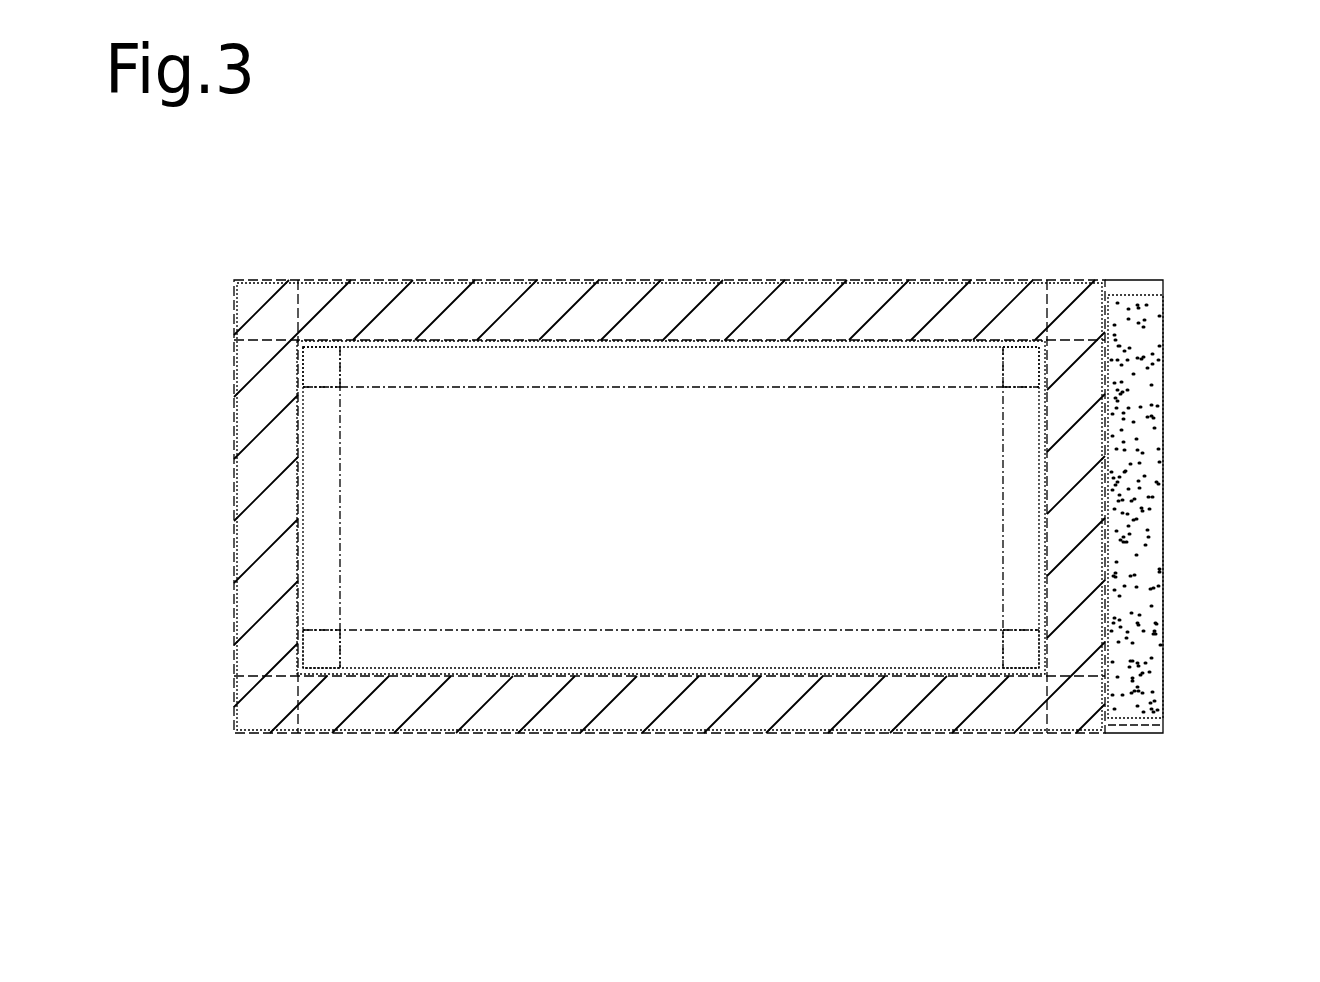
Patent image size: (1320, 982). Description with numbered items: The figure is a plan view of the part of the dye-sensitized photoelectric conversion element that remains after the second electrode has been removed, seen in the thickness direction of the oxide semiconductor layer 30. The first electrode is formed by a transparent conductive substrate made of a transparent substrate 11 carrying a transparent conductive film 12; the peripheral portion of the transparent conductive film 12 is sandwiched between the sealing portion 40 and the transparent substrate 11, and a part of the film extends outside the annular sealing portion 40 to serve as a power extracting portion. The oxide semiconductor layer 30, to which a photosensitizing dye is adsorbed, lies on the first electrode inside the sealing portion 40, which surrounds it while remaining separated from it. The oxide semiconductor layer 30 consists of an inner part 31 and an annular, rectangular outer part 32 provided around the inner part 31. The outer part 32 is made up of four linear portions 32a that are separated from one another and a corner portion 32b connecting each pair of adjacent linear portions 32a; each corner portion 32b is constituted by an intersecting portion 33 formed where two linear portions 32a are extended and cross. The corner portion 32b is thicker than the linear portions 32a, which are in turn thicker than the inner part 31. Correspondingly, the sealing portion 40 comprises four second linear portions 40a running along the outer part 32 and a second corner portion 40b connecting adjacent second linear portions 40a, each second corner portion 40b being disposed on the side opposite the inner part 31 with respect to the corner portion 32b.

The transparent substrate 11 is at (1145, 727).
The transparent conductive film 12 is at (1135, 675).
The oxide semiconductor layer 30 is at (1236, 453).
The inner part 31 is at (950, 548).
The outer part 32 is at (1025, 493).
The linear portion 32a is at (663, 340).
The corner portion 32b is at (299, 341).
The intersecting portion 33 is at (800, 508).
The sealing portion 40 is at (925, 305).
The second linear portion 40a is at (823, 280).
The second corner portion 40b is at (258, 280).